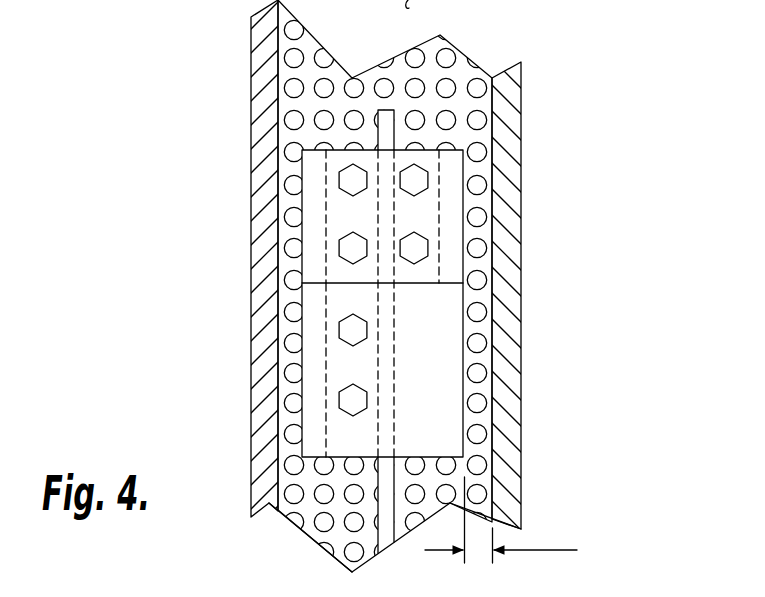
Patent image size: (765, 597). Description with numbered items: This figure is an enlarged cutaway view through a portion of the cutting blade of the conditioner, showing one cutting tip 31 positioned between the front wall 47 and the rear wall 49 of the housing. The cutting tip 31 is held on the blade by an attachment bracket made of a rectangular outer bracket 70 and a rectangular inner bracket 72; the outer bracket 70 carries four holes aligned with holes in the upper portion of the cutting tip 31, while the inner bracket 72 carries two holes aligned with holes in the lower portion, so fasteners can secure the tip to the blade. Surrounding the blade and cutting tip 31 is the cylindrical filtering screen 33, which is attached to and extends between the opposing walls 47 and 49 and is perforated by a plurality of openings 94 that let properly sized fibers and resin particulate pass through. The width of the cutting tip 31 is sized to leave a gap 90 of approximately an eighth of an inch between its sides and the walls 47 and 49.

The openings 94 is at (288, 57).
The filtering screen 33 is at (483, 48).
The front wall 47 is at (250, 153).
The rear wall 49 is at (505, 233).
The cutting tip 31 is at (300, 406).
The outer bracket 70 is at (326, 228).
The inner bracket 72 is at (323, 320).
The gap 90 is at (557, 550).